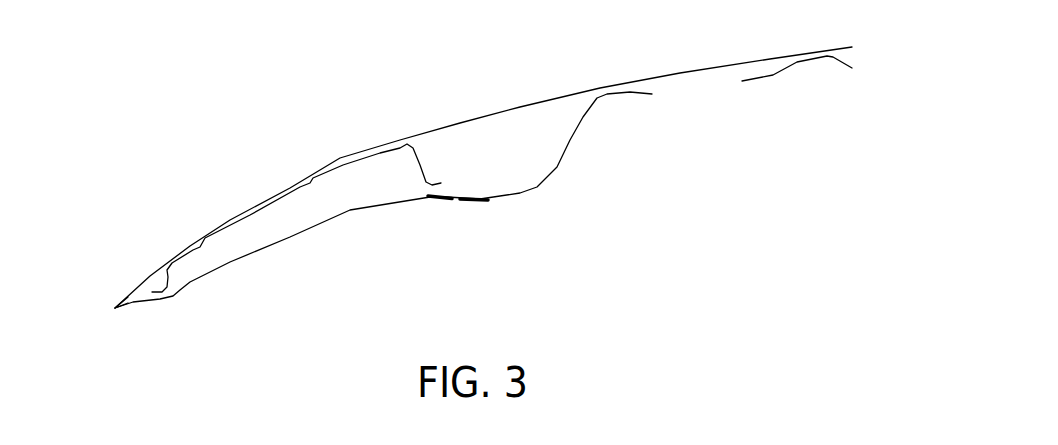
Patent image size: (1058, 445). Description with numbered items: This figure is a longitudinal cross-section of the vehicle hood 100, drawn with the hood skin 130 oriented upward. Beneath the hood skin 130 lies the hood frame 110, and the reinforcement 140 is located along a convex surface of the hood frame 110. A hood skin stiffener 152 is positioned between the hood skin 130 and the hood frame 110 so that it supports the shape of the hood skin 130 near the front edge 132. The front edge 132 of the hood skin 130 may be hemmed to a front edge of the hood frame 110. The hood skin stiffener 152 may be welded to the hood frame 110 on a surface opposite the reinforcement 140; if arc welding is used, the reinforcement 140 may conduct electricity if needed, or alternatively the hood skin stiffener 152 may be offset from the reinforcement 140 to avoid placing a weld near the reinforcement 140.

The vehicle hood 100 is at (143, 95).
The hood frame 110 is at (557, 157).
The hood skin 130 is at (520, 105).
The front edge 132 is at (113, 302).
The reinforcement 140 is at (458, 200).
The hood skin stiffener 152 is at (325, 168).